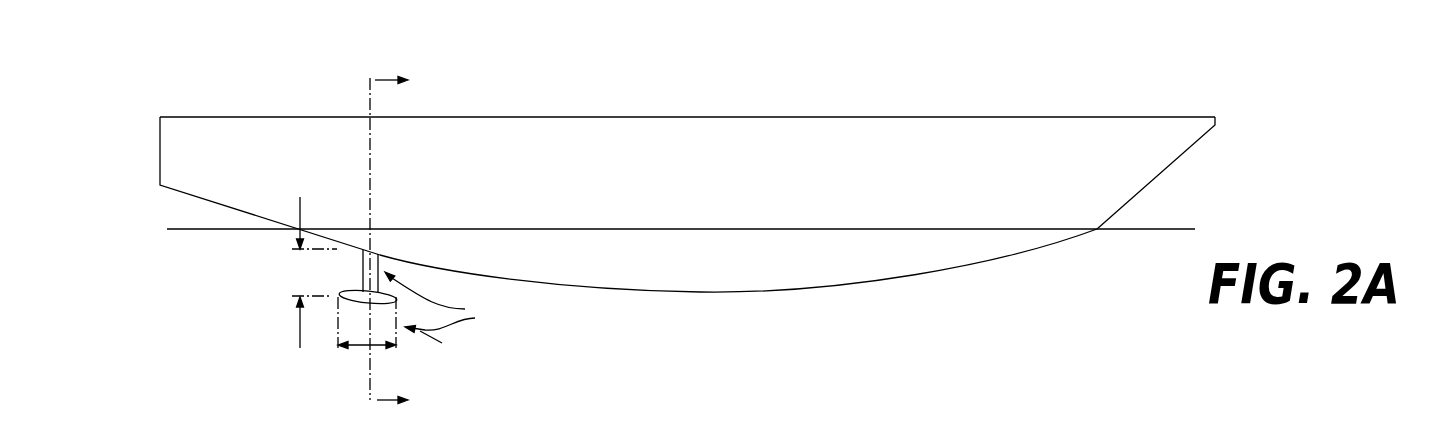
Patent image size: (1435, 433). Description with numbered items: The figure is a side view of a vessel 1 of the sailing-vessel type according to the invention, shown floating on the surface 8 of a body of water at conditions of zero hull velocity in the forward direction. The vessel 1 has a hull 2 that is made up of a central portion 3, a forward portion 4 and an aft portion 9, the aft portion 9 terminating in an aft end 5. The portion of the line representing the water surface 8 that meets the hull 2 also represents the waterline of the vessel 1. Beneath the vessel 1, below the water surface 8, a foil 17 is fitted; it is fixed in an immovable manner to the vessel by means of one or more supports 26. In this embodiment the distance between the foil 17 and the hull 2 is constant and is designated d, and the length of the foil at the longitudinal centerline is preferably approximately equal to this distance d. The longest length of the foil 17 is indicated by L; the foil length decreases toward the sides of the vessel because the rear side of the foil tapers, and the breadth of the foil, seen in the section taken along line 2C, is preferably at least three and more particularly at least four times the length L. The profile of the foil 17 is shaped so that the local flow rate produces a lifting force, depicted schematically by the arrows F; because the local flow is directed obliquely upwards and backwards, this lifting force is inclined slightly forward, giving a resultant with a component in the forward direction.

The vessel 1 is at (526, 62).
The hull 2 is at (267, 106).
The central portion 3 is at (590, 133).
The forward portion 4 is at (1115, 132).
The aft end 5 is at (160, 147).
The surface of a body of water 8 is at (1155, 229).
The aft portion 9 is at (220, 135).
The foil 17 is at (353, 302).
The support 26 is at (362, 272).
The section line 2C is at (411, 239).
The distance between foil and hull d is at (313, 272).
The longest length of the foil L is at (356, 348).
The arrows depicting lifting force F is at (432, 307).